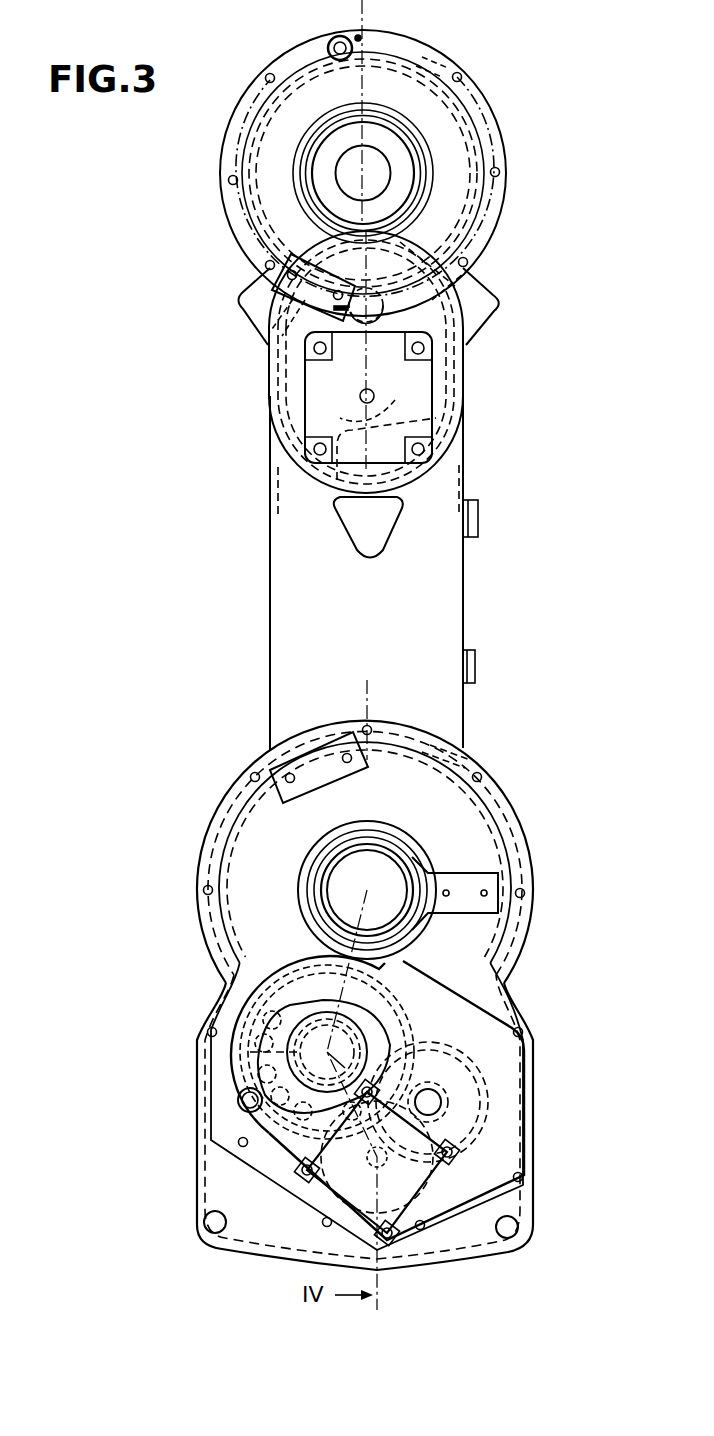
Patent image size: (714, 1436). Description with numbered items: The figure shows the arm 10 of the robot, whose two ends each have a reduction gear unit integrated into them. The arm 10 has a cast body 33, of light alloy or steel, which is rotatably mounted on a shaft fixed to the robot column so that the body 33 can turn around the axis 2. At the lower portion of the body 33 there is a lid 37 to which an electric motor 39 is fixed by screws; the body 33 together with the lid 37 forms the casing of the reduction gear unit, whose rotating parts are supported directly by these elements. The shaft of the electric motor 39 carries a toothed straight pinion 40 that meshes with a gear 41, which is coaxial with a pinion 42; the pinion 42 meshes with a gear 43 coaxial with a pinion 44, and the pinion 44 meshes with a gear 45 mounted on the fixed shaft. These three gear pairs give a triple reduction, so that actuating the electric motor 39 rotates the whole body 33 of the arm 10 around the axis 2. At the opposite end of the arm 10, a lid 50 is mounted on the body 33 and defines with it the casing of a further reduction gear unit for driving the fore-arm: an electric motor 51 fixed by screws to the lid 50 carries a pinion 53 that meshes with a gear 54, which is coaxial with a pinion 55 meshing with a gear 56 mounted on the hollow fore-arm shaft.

The axis 2 is at (374, 890).
The arm 10 is at (256, 632).
The body 33 is at (430, 626).
The lid 37 is at (470, 935).
The electric motor 39 is at (400, 1185).
The toothed straight pinion 40 is at (415, 1248).
The gear 41 is at (495, 1077).
The pinion 42 is at (462, 1112).
The gear 43 is at (282, 1148).
The pinion 44 is at (285, 1062).
The gear 45 is at (234, 932).
The lid 50 is at (450, 151).
The electric motor 51 is at (415, 402).
The pinion 53 is at (366, 402).
The gear 54 is at (440, 300).
The pinion 55 is at (340, 322).
The gear 56 is at (262, 236).